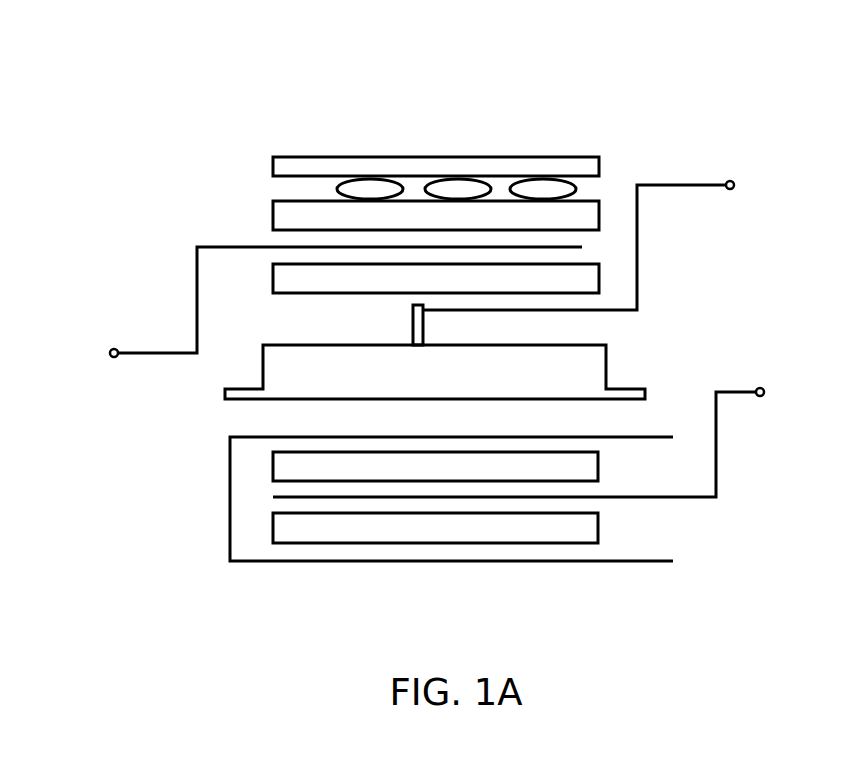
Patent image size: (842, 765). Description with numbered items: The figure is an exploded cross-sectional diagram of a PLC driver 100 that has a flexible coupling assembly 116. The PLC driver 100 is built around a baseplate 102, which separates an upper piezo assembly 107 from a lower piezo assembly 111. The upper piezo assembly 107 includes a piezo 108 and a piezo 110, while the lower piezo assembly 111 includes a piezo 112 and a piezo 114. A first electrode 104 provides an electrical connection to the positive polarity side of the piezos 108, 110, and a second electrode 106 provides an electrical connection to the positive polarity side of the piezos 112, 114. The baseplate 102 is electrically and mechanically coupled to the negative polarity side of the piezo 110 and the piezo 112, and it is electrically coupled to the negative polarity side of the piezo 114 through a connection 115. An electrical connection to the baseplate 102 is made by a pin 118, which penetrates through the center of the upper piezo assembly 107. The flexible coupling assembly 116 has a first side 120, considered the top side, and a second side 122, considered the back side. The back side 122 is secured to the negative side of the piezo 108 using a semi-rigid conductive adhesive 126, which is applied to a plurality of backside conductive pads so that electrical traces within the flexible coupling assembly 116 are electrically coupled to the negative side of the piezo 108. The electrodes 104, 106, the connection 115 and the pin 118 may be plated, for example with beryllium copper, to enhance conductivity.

The PLC driver 100 is at (178, 112).
The baseplate 102 is at (607, 365).
The first electrode 104 is at (197, 318).
The second electrode 106 is at (717, 446).
The upper piezo assembly 107 is at (652, 202).
The piezo 108 is at (273, 222).
The piezo 110 is at (273, 277).
The lower piezo assembly 111 is at (220, 452).
The piezo 112 is at (600, 465).
The piezo 114 is at (600, 527).
The connection 115 is at (271, 562).
The flexible coupling assembly 116 is at (600, 162).
The pin 118 is at (413, 322).
The first side 120 is at (300, 157).
The second side 122 is at (289, 181).
The semi-rigid conductive adhesive 126 is at (369, 180).